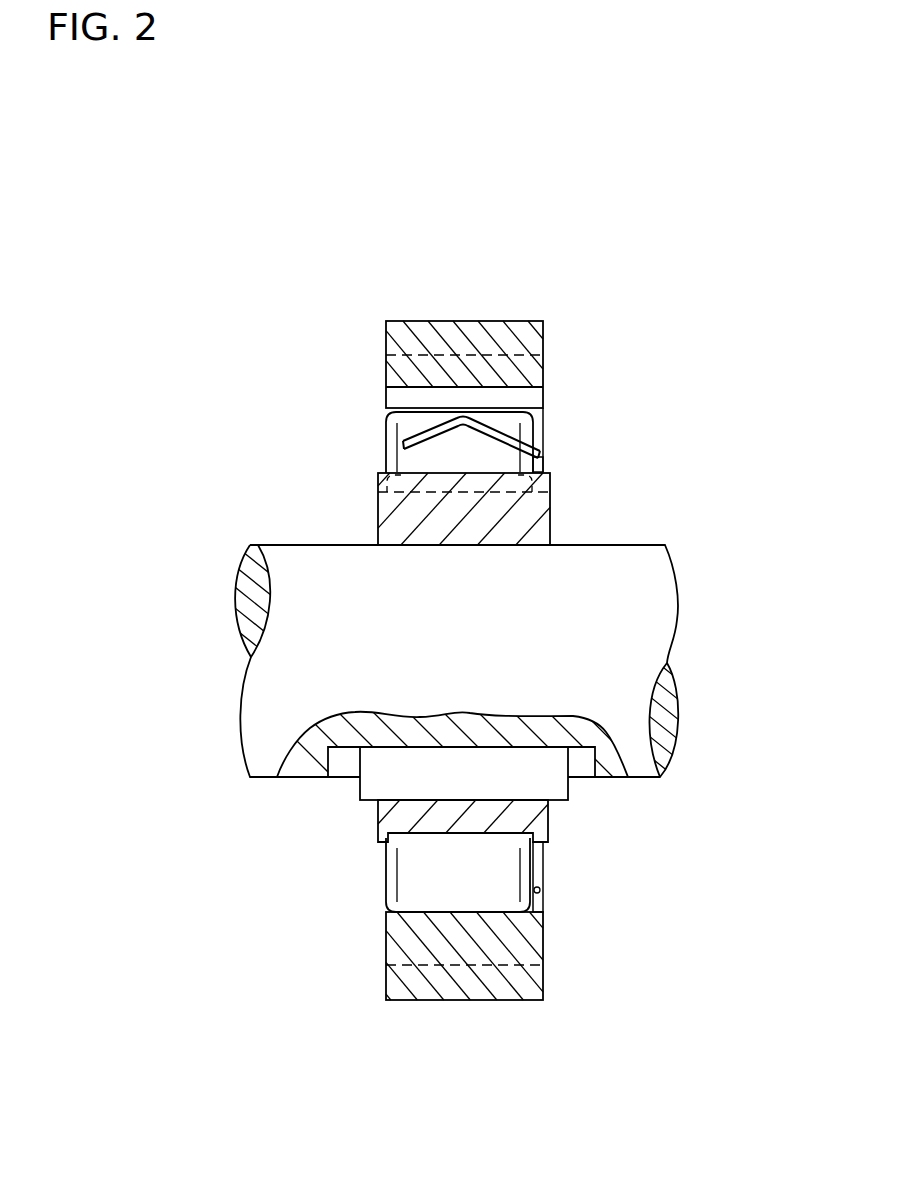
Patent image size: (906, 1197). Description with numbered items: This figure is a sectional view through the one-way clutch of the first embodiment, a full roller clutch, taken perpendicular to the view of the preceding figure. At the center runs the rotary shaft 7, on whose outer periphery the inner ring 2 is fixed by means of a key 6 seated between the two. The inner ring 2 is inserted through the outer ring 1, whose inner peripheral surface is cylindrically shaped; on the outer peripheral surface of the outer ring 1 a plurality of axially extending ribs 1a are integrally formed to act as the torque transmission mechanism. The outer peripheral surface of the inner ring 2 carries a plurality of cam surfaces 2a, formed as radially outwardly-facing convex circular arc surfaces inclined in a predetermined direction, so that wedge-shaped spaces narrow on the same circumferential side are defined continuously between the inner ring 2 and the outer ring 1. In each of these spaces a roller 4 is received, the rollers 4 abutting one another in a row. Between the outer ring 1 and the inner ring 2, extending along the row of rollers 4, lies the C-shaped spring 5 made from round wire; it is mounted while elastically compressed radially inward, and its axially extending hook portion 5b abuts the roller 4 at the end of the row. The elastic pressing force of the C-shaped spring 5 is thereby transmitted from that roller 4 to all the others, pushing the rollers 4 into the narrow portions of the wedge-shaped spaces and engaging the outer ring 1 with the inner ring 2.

The outer ring 1 is at (395, 377).
The ribs 1a is at (470, 345).
The inner ring 2 is at (468, 688).
The cam surfaces 2a is at (475, 838).
The rollers 4 is at (398, 428).
The C-shaped spring 5 is at (534, 528).
The hook portion 5b is at (489, 435).
The key 6 is at (547, 790).
The rotary shaft 7 is at (625, 608).